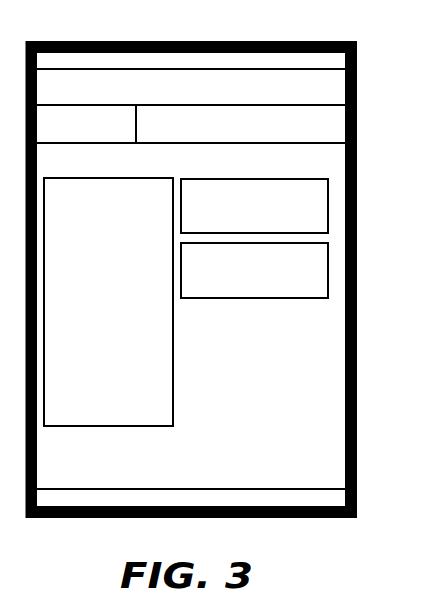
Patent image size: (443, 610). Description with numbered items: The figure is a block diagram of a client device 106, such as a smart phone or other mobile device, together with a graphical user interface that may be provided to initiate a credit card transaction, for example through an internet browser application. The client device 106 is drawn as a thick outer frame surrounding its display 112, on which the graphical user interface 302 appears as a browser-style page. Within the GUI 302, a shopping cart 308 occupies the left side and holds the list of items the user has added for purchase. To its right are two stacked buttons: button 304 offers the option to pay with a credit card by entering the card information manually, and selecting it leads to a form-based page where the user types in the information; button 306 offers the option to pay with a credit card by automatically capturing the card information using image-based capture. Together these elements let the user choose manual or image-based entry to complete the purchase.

The client device 106 is at (357, 57).
The display 112 is at (191, 63).
The graphical user interface 302 is at (327, 168).
The button 304 is at (330, 208).
The button 306 is at (330, 263).
The shopping cart 308 is at (173, 405).